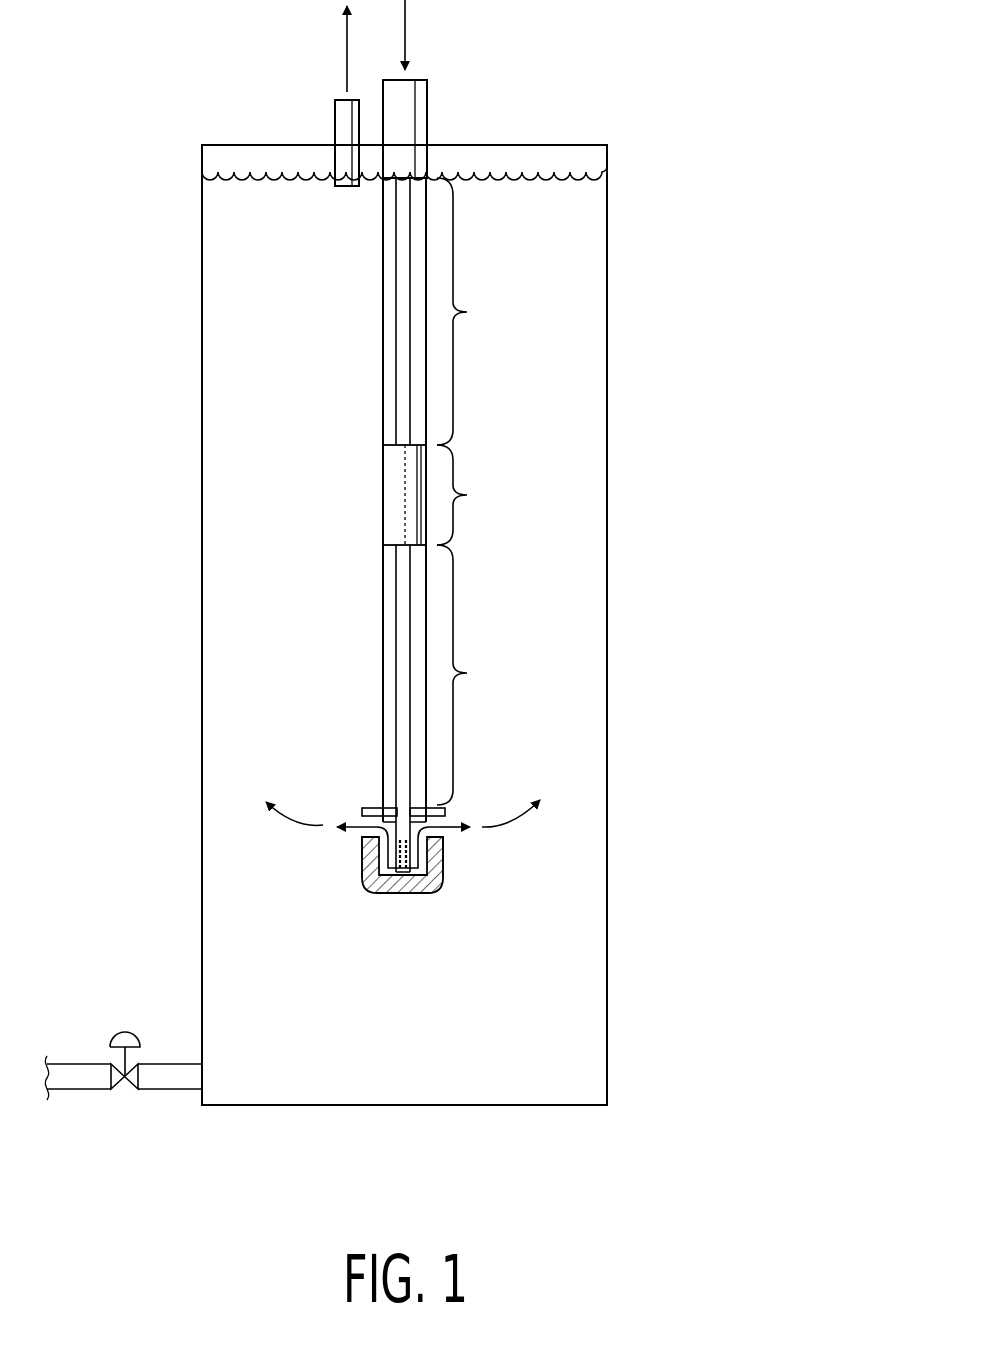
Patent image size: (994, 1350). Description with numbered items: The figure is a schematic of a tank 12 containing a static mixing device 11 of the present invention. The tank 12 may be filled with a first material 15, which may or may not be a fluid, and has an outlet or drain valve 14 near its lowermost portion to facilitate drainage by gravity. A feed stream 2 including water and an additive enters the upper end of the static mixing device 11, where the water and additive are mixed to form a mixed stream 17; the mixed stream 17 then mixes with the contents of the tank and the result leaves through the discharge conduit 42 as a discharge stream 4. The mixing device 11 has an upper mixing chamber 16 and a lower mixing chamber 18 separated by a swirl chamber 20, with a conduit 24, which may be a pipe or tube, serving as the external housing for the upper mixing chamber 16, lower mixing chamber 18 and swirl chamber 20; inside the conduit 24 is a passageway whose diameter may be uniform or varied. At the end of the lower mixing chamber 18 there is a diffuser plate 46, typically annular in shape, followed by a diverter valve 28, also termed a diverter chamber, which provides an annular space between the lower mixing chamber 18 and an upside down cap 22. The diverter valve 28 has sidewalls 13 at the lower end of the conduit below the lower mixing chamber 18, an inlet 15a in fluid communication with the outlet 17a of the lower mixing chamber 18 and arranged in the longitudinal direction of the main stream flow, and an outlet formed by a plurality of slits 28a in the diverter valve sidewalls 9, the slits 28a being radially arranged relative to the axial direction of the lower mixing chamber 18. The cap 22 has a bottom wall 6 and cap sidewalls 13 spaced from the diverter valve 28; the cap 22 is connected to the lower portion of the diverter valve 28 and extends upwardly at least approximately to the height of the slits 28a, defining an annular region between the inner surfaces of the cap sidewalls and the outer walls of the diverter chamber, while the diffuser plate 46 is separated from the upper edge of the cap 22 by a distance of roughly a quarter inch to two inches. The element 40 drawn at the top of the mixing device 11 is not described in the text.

The feed stream 2 is at (407, 12).
The discharge stream 4 is at (347, 56).
The bottom wall 6 is at (383, 893).
The diverter valve sidewalls 9 is at (432, 868).
The static mixing device 11 is at (337, 485).
The tank 12 is at (607, 232).
The sidewalls 13 is at (370, 852).
The drain valve 14 is at (115, 1036).
The first material 15 is at (270, 182).
The inlet 15a is at (393, 822).
The upper mixing chamber 16 is at (496, 322).
The mixed stream 17 is at (518, 818).
The outlet of the lower mixing chamber 17a is at (397, 830).
The lower mixing chamber 18 is at (496, 690).
The swirl chamber 20 is at (496, 509).
The cap 22 is at (417, 893).
The conduit 24 is at (382, 322).
The diverter valve 28 is at (425, 830).
The slits 28a is at (396, 876).
The top fitting 40 is at (422, 117).
The discharge conduit 42 is at (342, 125).
The diffuser plate 46 is at (443, 812).